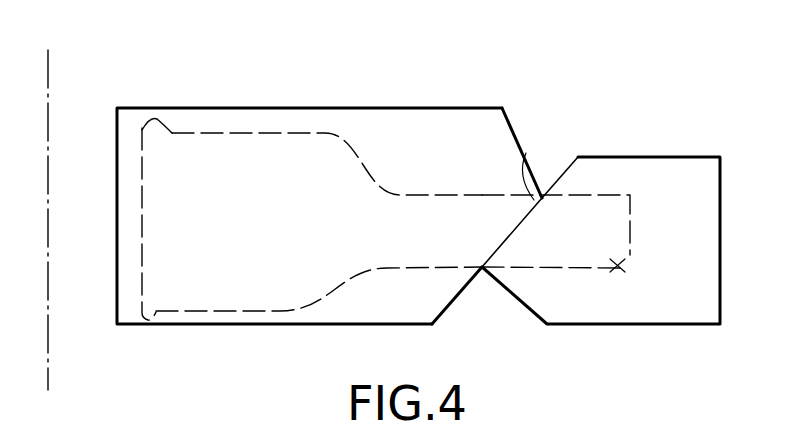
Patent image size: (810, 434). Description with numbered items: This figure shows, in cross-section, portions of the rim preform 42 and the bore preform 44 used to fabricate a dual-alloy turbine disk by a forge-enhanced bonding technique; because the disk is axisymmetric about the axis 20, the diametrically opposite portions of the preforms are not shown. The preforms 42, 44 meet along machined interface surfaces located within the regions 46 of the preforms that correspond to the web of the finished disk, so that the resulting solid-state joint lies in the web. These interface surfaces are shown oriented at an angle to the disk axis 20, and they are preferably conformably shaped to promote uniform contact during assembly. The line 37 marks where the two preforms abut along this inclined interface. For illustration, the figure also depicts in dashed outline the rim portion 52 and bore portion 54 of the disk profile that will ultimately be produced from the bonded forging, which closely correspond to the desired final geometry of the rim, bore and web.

The axis 20 is at (48, 82).
The fold line 37 is at (526, 153).
The rim preform 42 is at (700, 168).
The bore preform 44 is at (377, 126).
The regions 46 is at (516, 290).
The rim portion 52 is at (620, 268).
The bore portion 54 is at (408, 203).